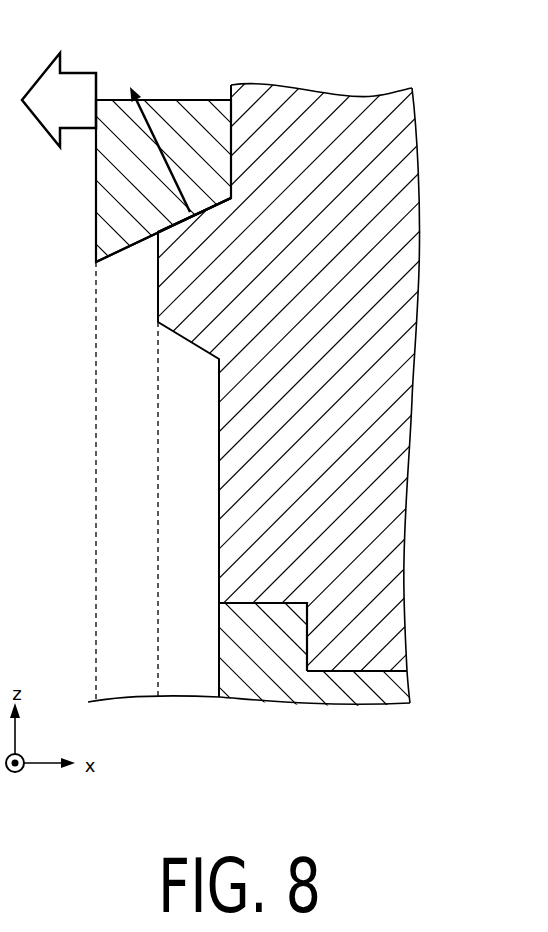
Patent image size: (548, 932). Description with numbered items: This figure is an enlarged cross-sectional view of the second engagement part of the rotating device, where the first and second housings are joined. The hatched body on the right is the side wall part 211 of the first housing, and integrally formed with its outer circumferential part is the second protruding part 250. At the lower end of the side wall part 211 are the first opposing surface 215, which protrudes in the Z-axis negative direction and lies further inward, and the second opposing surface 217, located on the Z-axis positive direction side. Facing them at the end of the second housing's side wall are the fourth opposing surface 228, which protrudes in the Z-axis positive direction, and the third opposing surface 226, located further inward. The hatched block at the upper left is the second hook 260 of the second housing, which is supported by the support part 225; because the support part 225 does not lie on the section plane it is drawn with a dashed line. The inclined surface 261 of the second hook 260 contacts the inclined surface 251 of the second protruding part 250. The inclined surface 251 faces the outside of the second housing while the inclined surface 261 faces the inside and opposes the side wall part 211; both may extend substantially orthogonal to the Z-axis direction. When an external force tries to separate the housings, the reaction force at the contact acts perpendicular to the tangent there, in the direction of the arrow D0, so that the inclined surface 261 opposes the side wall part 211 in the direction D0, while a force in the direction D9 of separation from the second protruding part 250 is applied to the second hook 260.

The side wall part 211 is at (330, 105).
The first opposing surface 215 is at (350, 671).
The second opposing surface 217 is at (281, 603).
The support part 225 is at (150, 535).
The third opposing surface 226 is at (377, 675).
The fourth opposing surface 228 is at (271, 604).
The second protruding part 250 is at (242, 248).
The inclined surface 251 is at (215, 212).
The second hook 260 is at (192, 107).
The inclined surface 261 is at (167, 233).
The direction of separation D9 is at (76, 72).
The arrow indicating reaction force direction D0 is at (152, 133).